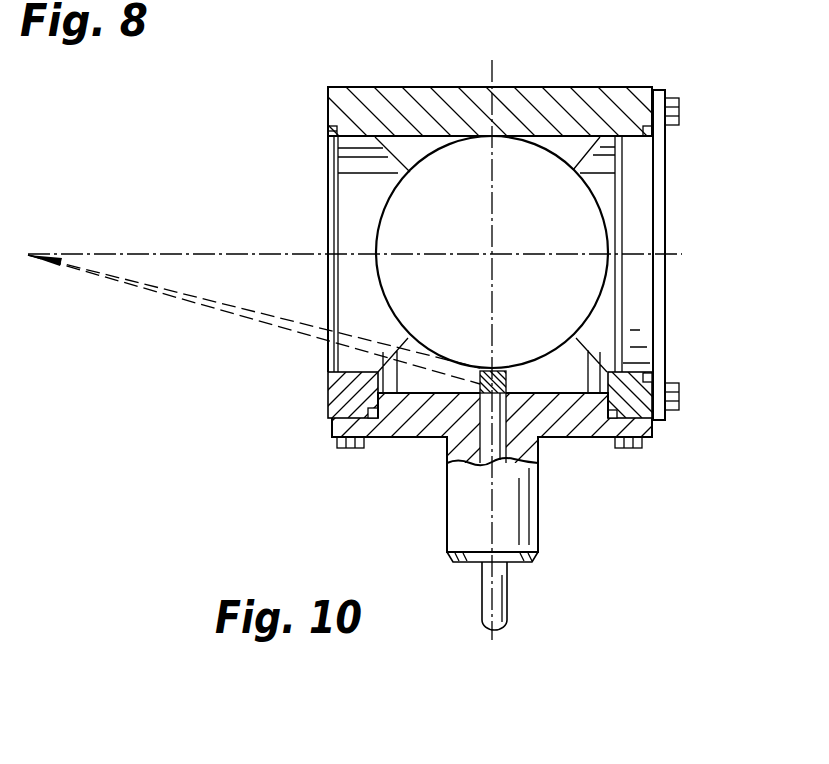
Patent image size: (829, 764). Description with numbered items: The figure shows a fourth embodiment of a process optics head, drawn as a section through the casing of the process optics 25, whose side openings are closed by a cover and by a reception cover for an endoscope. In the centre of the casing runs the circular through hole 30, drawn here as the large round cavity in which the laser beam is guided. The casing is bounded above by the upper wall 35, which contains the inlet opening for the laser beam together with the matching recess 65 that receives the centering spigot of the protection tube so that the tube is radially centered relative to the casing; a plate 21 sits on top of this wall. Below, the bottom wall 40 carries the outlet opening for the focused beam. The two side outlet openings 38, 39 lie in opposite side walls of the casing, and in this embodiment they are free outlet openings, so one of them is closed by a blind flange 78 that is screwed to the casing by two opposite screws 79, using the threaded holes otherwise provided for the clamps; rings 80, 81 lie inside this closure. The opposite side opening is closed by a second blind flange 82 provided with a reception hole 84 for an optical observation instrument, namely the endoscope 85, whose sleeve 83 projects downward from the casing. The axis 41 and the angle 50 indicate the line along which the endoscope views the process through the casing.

The top plate 21 is at (436, 87).
The process optics 25 is at (283, 170).
The circular through hole 30 is at (455, 220).
The upper wall 35 is at (360, 87).
The outlet opening 38 is at (348, 167).
The outlet opening 39 is at (603, 165).
The bottom wall 40 is at (567, 440).
The axis 41 is at (686, 246).
The deflection angle 50 is at (29, 253).
The recess 65 is at (655, 136).
The blind flange 78 is at (672, 193).
The screws 79 is at (679, 110).
The inner ring 80 is at (658, 310).
The lower ring 81 is at (635, 353).
The blind flange 82 is at (406, 446).
The sleeve 83 is at (523, 523).
The reception hole 84 is at (448, 468).
The endoscope 85 is at (497, 592).